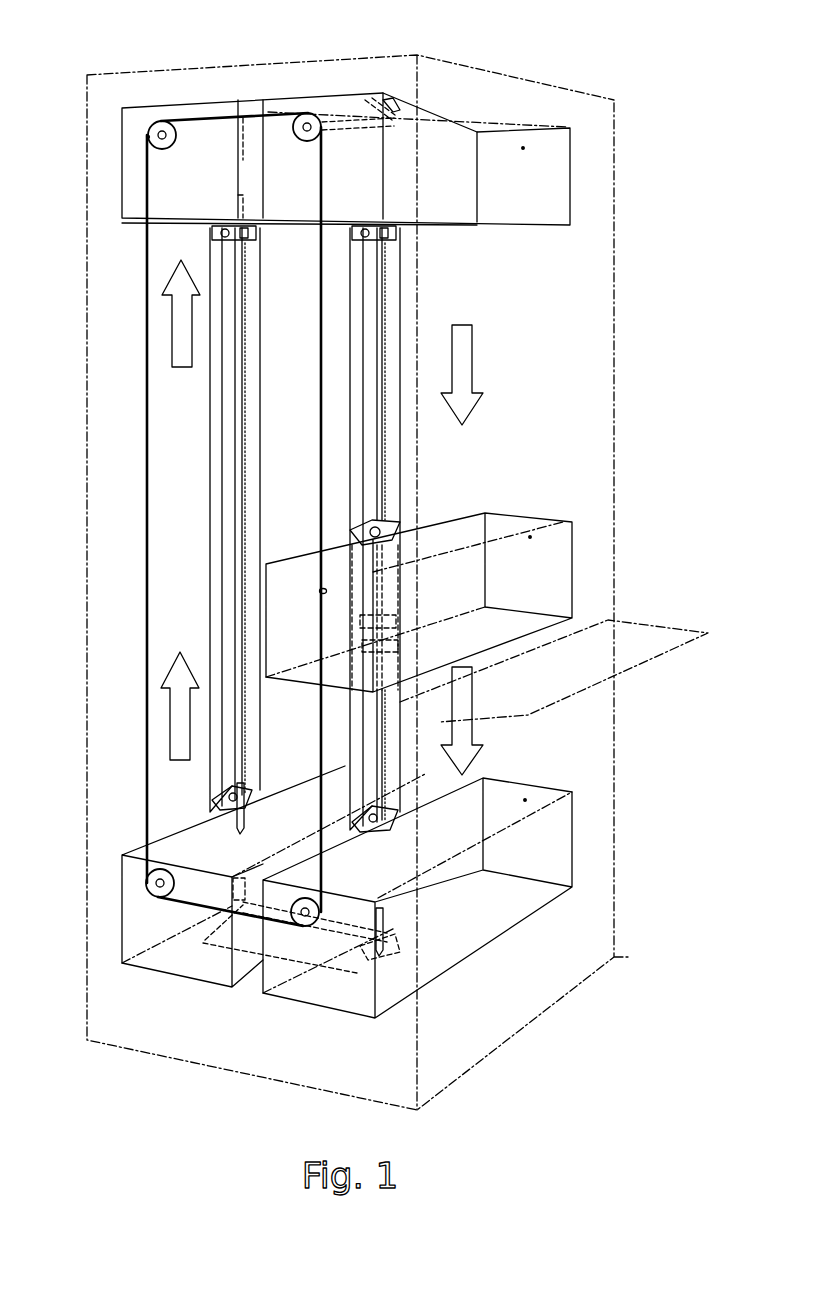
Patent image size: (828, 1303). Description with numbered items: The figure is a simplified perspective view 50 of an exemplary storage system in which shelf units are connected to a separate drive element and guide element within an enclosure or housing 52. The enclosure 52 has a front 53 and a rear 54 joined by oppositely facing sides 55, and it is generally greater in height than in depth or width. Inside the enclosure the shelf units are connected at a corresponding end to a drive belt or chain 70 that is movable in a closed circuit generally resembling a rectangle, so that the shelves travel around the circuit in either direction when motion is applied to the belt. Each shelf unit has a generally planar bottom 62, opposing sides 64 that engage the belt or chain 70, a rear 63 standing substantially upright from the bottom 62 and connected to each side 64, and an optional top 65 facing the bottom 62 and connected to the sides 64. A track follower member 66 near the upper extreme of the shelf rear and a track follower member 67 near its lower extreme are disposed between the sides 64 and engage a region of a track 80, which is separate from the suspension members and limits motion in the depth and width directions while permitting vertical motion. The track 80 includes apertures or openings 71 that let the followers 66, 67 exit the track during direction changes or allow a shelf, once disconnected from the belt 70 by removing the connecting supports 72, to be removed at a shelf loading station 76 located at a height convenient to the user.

The simplified perspective view 50 is at (630, 133).
The enclosure or housing 52 is at (624, 959).
The front 53 is at (582, 393).
The rear 54 is at (118, 415).
The side 55 is at (105, 683).
The bottom 62 is at (487, 230).
The rear 63 is at (430, 178).
The sides 64 is at (171, 200).
The top 65 is at (484, 113).
The track follower member 66 is at (244, 160).
The track follower member 67 is at (258, 230).
The drive belt or chain 70 is at (320, 393).
The openings 71 is at (357, 95).
The connecting supports 72 is at (283, 633).
The shelf loading station 76 is at (583, 516).
The track 80 is at (258, 104).